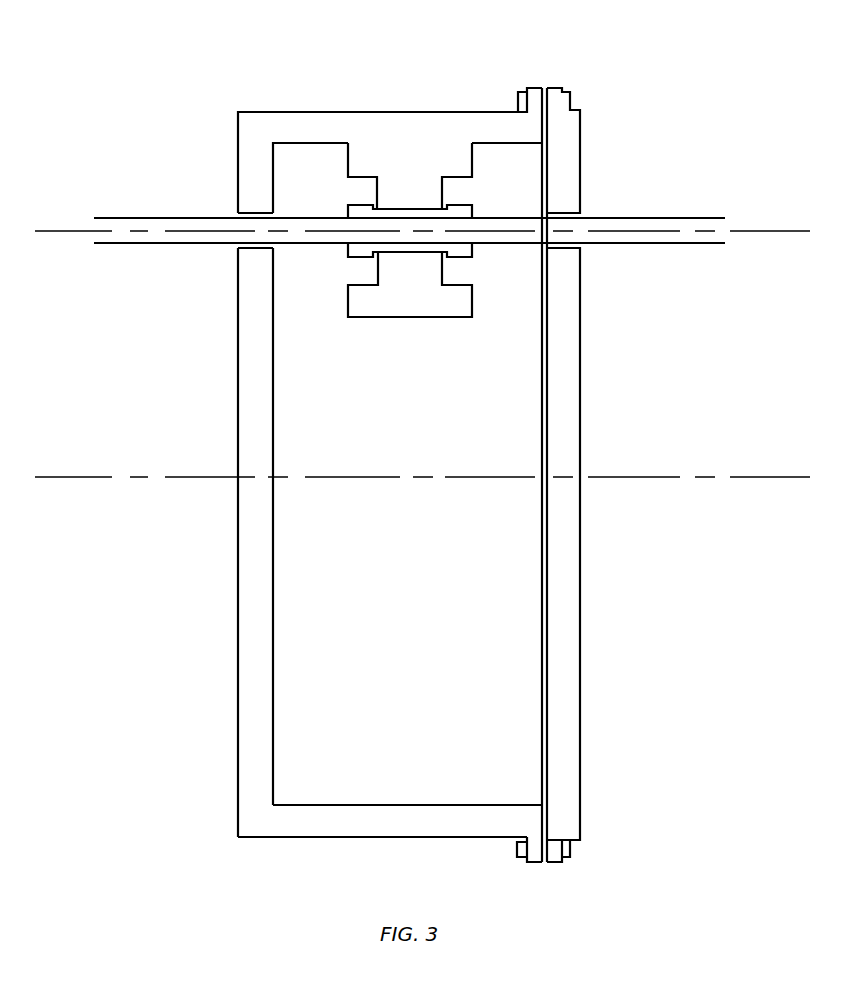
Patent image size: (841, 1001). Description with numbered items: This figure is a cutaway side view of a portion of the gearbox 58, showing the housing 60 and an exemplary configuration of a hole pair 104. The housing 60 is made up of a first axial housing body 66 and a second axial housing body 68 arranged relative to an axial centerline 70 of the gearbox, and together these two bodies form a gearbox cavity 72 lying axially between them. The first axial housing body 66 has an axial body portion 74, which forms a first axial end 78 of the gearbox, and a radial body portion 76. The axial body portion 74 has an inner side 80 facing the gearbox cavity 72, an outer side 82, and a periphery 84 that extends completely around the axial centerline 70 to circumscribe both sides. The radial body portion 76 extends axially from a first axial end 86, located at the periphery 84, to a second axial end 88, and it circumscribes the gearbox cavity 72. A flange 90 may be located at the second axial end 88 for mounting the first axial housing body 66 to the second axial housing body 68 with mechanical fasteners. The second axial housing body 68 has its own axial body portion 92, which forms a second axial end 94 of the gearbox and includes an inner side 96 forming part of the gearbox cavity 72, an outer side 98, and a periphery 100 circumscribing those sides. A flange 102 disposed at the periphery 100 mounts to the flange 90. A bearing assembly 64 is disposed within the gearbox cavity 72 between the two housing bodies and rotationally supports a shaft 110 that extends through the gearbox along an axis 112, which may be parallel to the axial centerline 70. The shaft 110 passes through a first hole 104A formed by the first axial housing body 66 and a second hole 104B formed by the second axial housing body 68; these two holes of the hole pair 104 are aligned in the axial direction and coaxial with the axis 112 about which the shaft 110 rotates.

The gearbox 58 is at (730, 130).
The housing 60 is at (592, 683).
The bearing assembly 64 is at (497, 275).
The first axial housing body 66 is at (255, 690).
The second axial housing body 68 is at (562, 603).
The axial centerline 70 is at (733, 477).
The gearbox cavity 72 is at (326, 775).
The axial body portion 74 is at (256, 627).
The radial body portion 76 is at (447, 820).
The first axial end 78 is at (220, 553).
The inner side 80 is at (273, 543).
The outer side 82 is at (238, 433).
The periphery 84 is at (278, 112).
The first axial end 86 is at (234, 100).
The second axial end 88 is at (512, 85).
The flange 90 is at (534, 97).
The axial body portion 92 is at (565, 425).
The second axial end 94 is at (590, 537).
The inner side 96 is at (545, 700).
The outer side 98 is at (580, 648).
The periphery 100 is at (583, 88).
The flange 102 is at (552, 862).
The hole pair 104 is at (409, 230).
The first hole 104A is at (233, 250).
The second hole 104B is at (588, 250).
The shaft 110 is at (297, 243).
The axis 112 is at (758, 232).